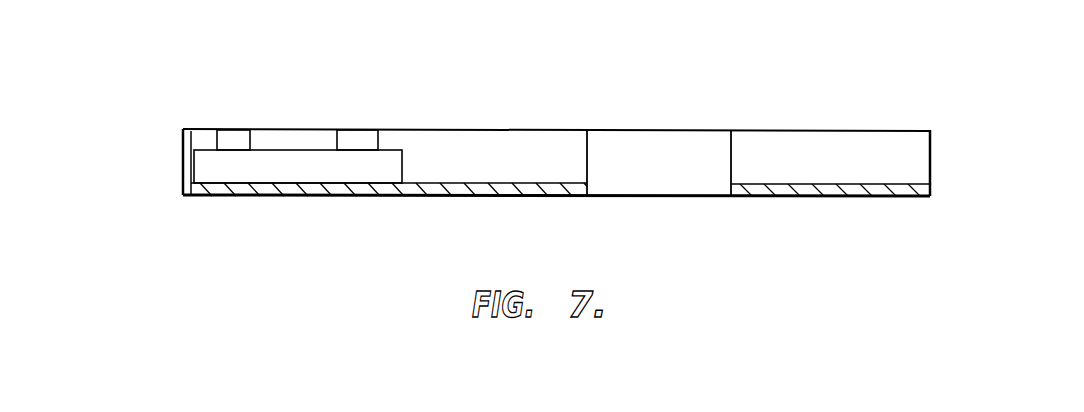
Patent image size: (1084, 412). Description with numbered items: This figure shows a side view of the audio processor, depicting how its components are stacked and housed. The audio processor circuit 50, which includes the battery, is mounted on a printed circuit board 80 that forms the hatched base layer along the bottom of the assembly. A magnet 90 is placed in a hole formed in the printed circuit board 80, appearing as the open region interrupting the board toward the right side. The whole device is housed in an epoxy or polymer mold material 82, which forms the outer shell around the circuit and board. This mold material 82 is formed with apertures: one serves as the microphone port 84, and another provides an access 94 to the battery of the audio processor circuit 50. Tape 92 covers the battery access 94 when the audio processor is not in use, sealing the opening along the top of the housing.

The audio processor circuit 50 is at (205, 170).
The printed circuit board 80 is at (460, 186).
The epoxy or polymer mold material 82 is at (868, 148).
The microphone port 84 is at (365, 138).
The magnet 90 is at (687, 183).
The tape 92 is at (226, 127).
The access 94 is at (235, 138).